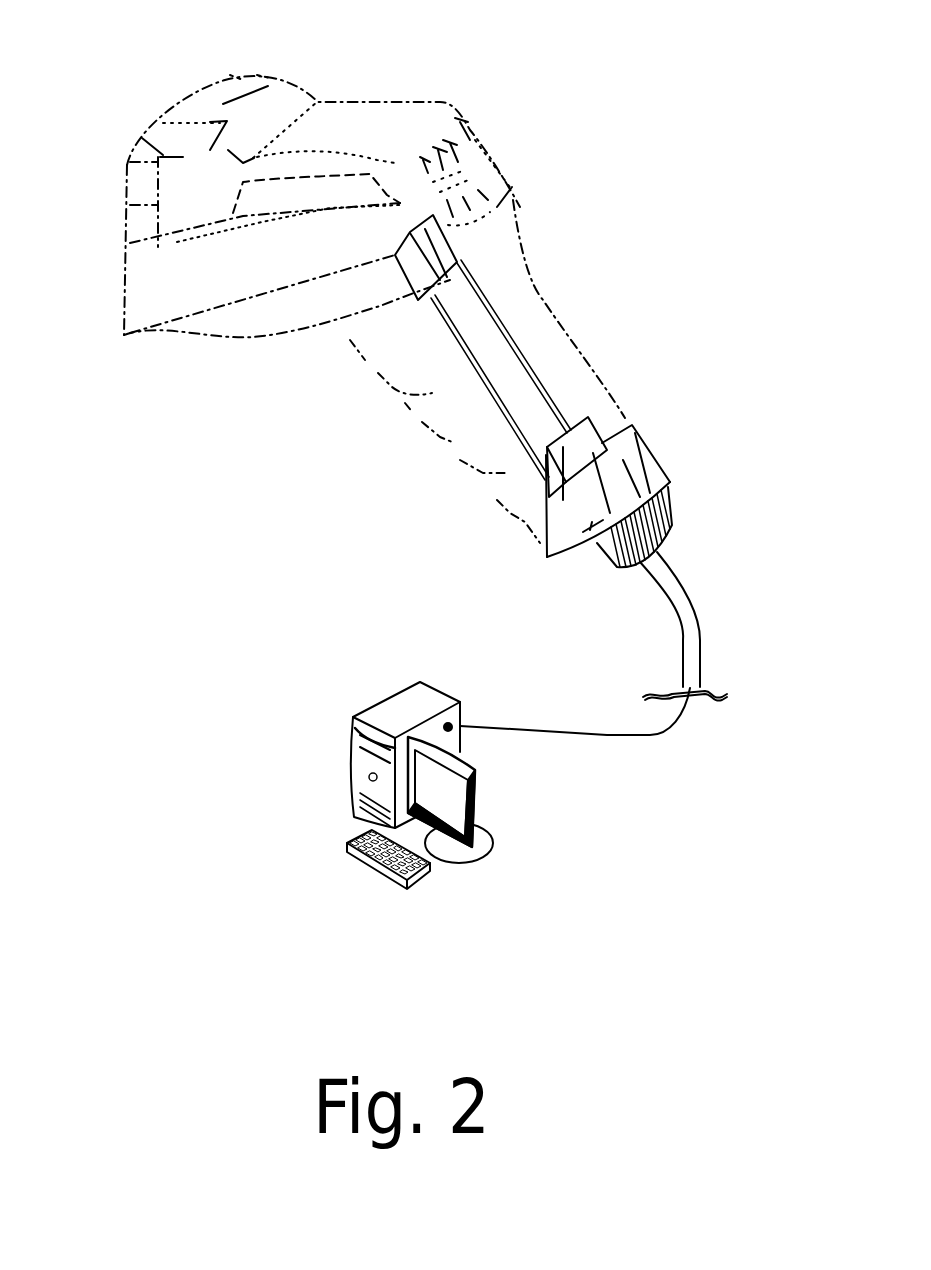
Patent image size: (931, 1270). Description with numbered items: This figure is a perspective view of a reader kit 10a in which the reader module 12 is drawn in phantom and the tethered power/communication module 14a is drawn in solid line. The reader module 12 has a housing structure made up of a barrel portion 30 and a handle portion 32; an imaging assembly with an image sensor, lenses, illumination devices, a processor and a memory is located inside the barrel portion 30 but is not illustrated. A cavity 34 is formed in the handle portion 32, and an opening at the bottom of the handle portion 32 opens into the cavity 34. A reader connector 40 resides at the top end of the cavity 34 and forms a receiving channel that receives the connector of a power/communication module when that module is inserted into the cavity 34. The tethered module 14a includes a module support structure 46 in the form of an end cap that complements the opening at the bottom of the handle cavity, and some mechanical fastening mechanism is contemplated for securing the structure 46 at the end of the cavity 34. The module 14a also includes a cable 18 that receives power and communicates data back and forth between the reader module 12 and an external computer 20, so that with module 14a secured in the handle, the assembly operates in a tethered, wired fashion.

The reader kit 10a is at (422, 84).
The reader module 12 is at (235, 125).
The power/communication module 14a is at (523, 420).
The cable 18 is at (693, 627).
The external computer 20 is at (362, 773).
The barrel portion 30 is at (298, 248).
The handle portion 32 is at (514, 488).
The cavity 34 is at (567, 372).
The reader connector 40 is at (437, 243).
The module support structure 46 is at (668, 480).